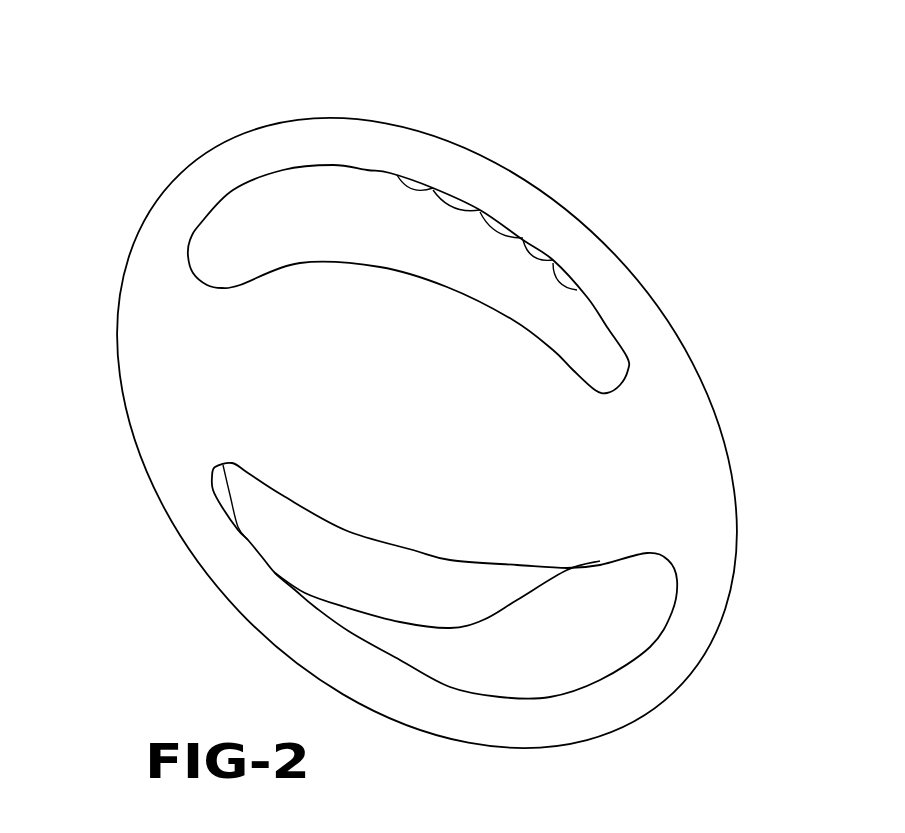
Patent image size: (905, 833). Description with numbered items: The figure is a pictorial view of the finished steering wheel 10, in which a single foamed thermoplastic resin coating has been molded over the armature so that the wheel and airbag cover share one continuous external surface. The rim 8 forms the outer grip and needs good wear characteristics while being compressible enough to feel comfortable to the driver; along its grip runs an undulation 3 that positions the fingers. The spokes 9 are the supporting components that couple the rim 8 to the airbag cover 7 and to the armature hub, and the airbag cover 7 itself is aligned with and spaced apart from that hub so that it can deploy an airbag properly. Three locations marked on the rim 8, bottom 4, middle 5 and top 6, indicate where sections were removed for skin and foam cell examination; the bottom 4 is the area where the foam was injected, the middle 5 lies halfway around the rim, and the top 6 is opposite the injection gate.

The undulation 3 is at (493, 223).
The bottom 4 is at (272, 250).
The middle 5 is at (707, 390).
The top 6 is at (430, 125).
The airbag cover 7 is at (387, 425).
The rim 8 is at (642, 692).
The spokes 9 is at (240, 400).
The steering wheel 10 is at (665, 230).